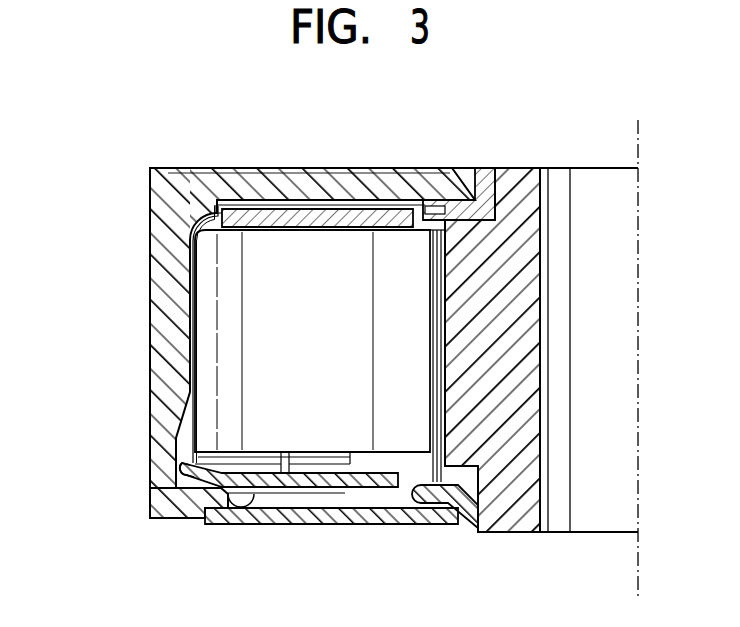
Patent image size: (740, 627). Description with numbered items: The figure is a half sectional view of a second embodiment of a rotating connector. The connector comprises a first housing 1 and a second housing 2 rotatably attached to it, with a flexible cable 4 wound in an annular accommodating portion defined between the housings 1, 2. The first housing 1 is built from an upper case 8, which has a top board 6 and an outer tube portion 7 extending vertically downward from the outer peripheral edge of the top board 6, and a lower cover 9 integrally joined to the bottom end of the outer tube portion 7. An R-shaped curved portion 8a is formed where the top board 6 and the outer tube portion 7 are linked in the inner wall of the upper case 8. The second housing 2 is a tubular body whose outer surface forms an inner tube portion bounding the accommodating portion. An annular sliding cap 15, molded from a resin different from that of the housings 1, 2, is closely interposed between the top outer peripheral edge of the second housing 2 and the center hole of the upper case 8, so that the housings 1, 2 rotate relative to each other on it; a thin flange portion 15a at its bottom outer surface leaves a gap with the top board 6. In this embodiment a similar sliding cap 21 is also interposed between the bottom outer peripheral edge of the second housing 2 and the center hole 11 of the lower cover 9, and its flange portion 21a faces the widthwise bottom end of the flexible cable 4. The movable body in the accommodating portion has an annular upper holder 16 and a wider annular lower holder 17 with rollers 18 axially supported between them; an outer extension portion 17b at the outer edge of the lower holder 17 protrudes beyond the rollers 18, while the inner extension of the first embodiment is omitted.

The first housing 1 is at (246, 313).
The second housing 2 is at (528, 202).
The flexible cable 4 is at (190, 395).
The top board 6 is at (351, 188).
The outer tube portion 7 is at (168, 345).
The upper case 8 is at (262, 296).
The curved portion 8a is at (238, 202).
The lower cover 9 is at (165, 507).
The center hole 11 is at (450, 510).
The sliding cap 15 is at (485, 168).
The flange portion 15a is at (432, 200).
The upper holder 16 is at (300, 216).
The lower holder 17 is at (291, 488).
The outer extension portion 17b is at (188, 478).
The rollers 18 is at (222, 292).
The sliding cap 21 is at (468, 505).
The flange portion 21a is at (405, 490).